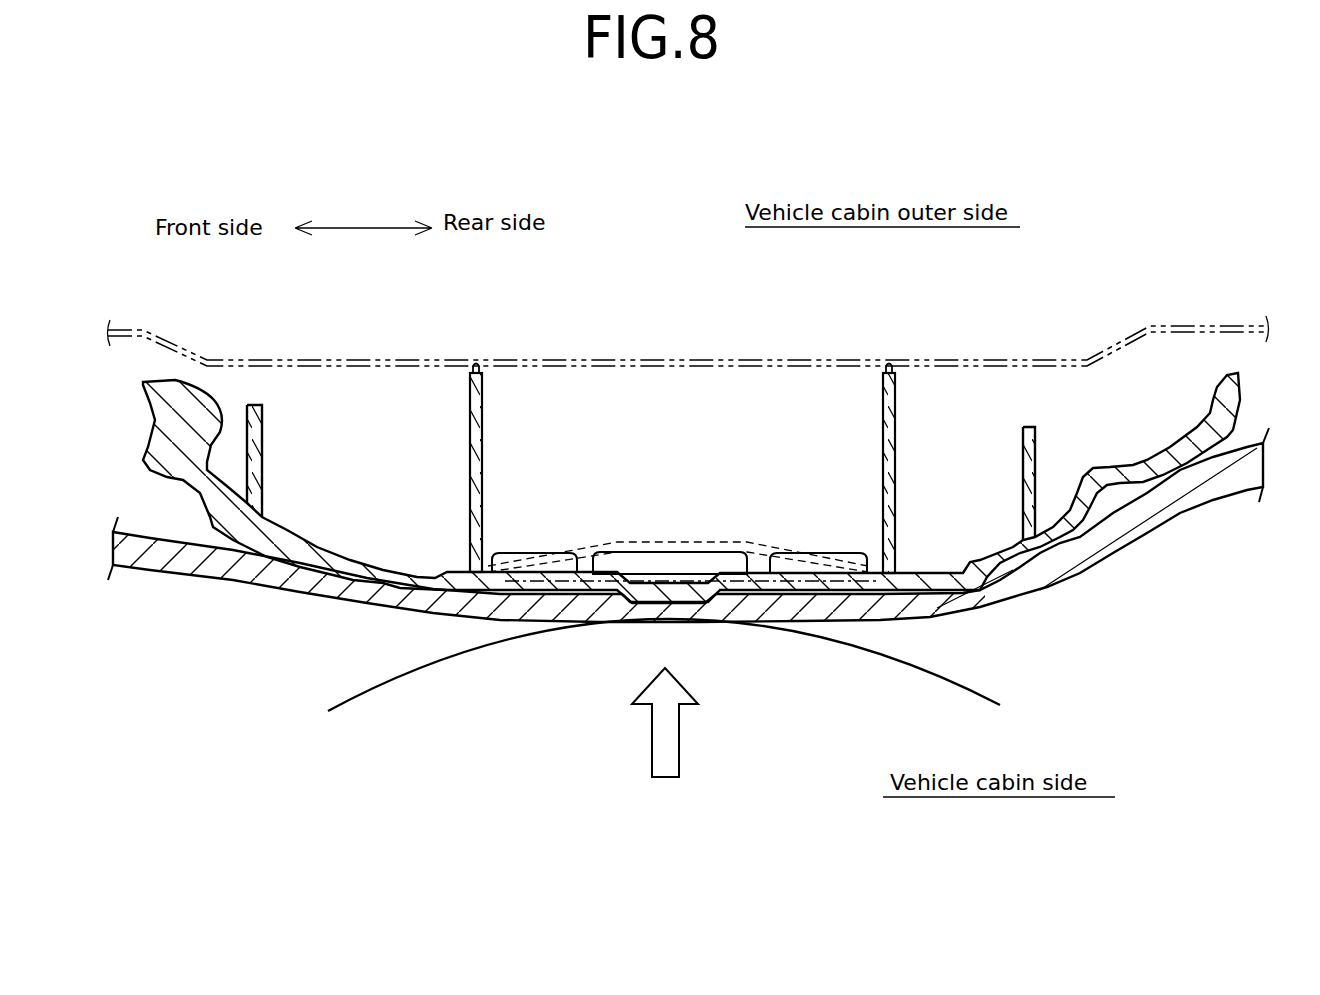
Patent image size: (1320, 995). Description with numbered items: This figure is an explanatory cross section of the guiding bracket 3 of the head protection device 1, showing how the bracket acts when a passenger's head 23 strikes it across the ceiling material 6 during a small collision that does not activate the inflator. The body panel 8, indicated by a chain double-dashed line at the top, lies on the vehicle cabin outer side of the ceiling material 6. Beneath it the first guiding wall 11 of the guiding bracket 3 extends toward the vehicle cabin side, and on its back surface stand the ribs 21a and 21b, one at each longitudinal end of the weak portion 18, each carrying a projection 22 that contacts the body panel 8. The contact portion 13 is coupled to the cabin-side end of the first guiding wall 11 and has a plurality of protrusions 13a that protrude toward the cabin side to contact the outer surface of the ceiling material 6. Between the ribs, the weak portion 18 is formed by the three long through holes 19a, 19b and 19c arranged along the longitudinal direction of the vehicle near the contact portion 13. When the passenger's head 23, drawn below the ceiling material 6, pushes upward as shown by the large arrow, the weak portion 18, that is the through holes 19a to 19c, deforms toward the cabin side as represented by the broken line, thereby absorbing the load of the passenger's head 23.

The head protection device 1 is at (1098, 602).
The guiding bracket 3 is at (354, 528).
The ceiling material 6 is at (1033, 592).
The body panel 8 is at (967, 355).
The first guiding wall 11 is at (585, 583).
The contact portion 13 is at (688, 538).
The protrusions 13a is at (380, 584).
The weak portion 18 is at (715, 537).
The through hole 19a is at (613, 552).
The through hole 19b is at (512, 553).
The through hole 19c is at (792, 550).
The rib 21a is at (483, 437).
The rib 21b is at (897, 467).
The projection 22 is at (477, 365).
The passenger's head 23 is at (990, 686).